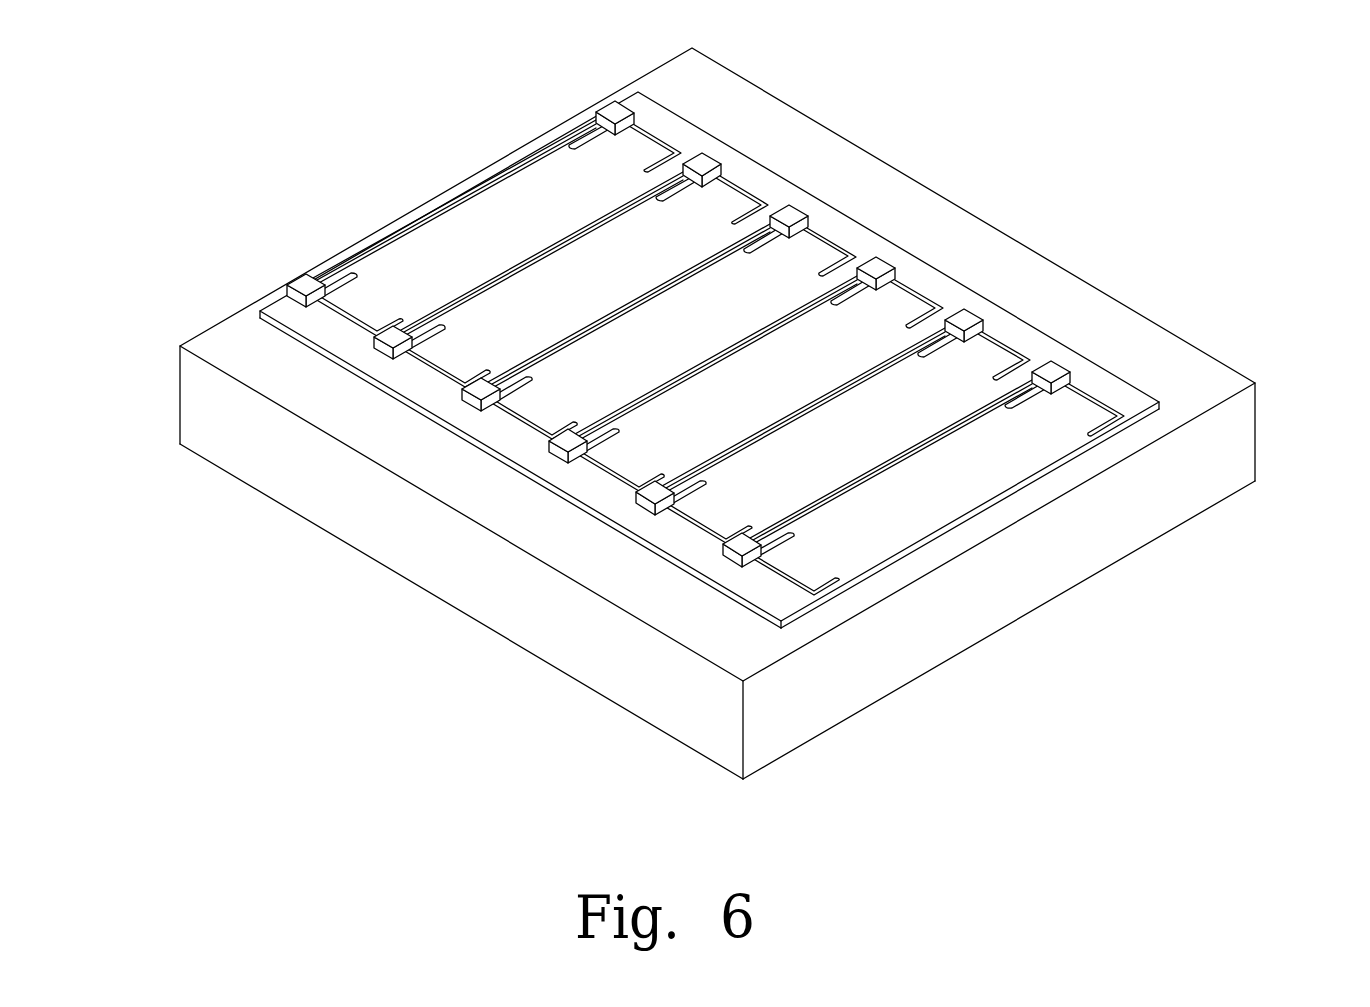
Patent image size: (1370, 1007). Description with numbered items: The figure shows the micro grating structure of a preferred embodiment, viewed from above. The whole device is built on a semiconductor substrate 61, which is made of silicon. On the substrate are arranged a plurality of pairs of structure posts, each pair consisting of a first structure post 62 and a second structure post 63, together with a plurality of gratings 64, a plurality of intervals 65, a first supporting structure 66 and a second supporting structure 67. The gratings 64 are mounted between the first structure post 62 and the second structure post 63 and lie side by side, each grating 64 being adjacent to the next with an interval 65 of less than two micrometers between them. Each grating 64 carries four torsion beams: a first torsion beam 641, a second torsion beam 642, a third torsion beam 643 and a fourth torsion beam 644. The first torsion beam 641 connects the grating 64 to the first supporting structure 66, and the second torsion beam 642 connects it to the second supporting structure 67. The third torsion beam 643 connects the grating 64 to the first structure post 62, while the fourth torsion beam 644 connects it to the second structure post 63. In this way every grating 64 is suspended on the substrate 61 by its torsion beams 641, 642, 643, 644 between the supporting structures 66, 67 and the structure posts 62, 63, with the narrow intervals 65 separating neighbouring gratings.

The semiconductor substrate 61 is at (713, 708).
The first structure post 62 is at (745, 540).
The second structure post 63 is at (1058, 366).
The grating 64 is at (915, 510).
The interval 65 is at (940, 432).
The first supporting structure 66 is at (773, 598).
The second supporting structure 67 is at (1110, 390).
The first torsion beam 641 is at (838, 580).
The second torsion beam 642 is at (1097, 437).
The third torsion beam 643 is at (777, 533).
The fourth torsion beam 644 is at (1005, 398).